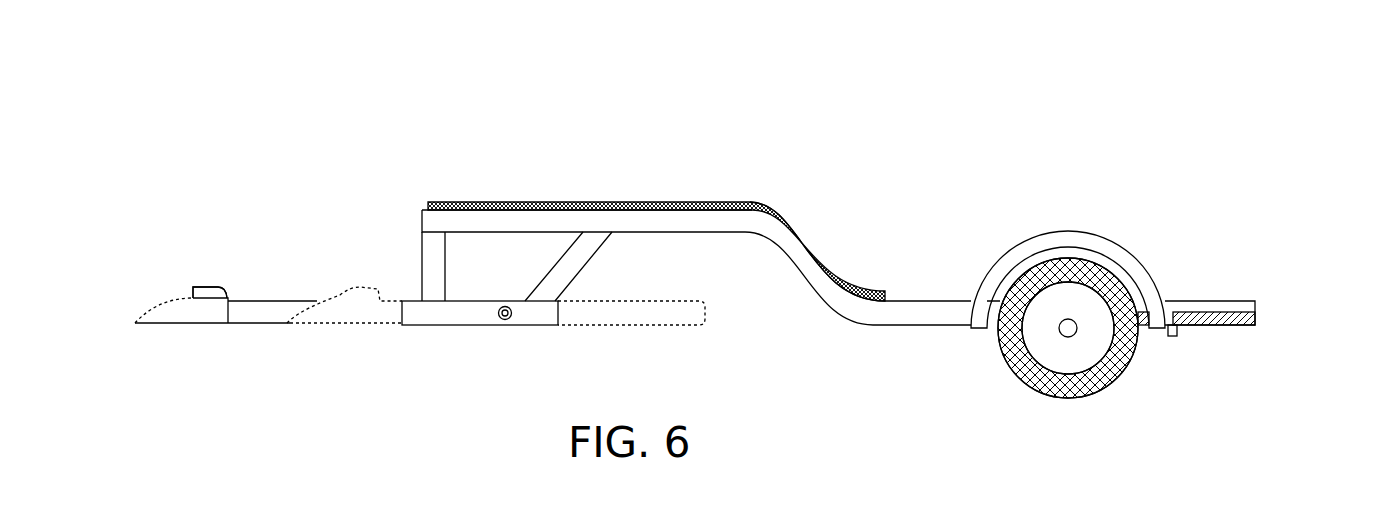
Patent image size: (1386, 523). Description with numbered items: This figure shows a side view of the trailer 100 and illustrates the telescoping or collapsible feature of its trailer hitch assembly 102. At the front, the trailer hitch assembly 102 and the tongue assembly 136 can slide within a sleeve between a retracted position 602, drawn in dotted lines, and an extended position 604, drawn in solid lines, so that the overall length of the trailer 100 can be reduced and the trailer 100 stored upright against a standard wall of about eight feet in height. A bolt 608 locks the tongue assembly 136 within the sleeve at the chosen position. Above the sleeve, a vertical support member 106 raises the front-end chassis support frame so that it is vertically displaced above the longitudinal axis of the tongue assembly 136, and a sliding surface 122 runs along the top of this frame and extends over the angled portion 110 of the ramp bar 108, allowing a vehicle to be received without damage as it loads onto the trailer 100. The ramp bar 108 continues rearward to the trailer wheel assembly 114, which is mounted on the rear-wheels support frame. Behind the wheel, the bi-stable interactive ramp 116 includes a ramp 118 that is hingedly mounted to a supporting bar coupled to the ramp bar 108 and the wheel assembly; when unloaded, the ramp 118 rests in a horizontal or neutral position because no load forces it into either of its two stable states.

The trailer 100 is at (828, 108).
The trailer hitch assembly 102 is at (303, 378).
The vertical support member 106 is at (422, 268).
The ramp bar 108 is at (943, 301).
The angled portion of ramp bar 110 is at (795, 288).
The trailer wheel assembly 114 is at (1070, 214).
The bi-stable interactive ramp 116 is at (1229, 350).
The ramp 118 is at (1257, 319).
The sliding surface 122 is at (631, 190).
The tongue assembly 136 is at (210, 323).
The retracted position 602 is at (335, 274).
The extended position 604 is at (240, 274).
The bolt 608 is at (507, 325).